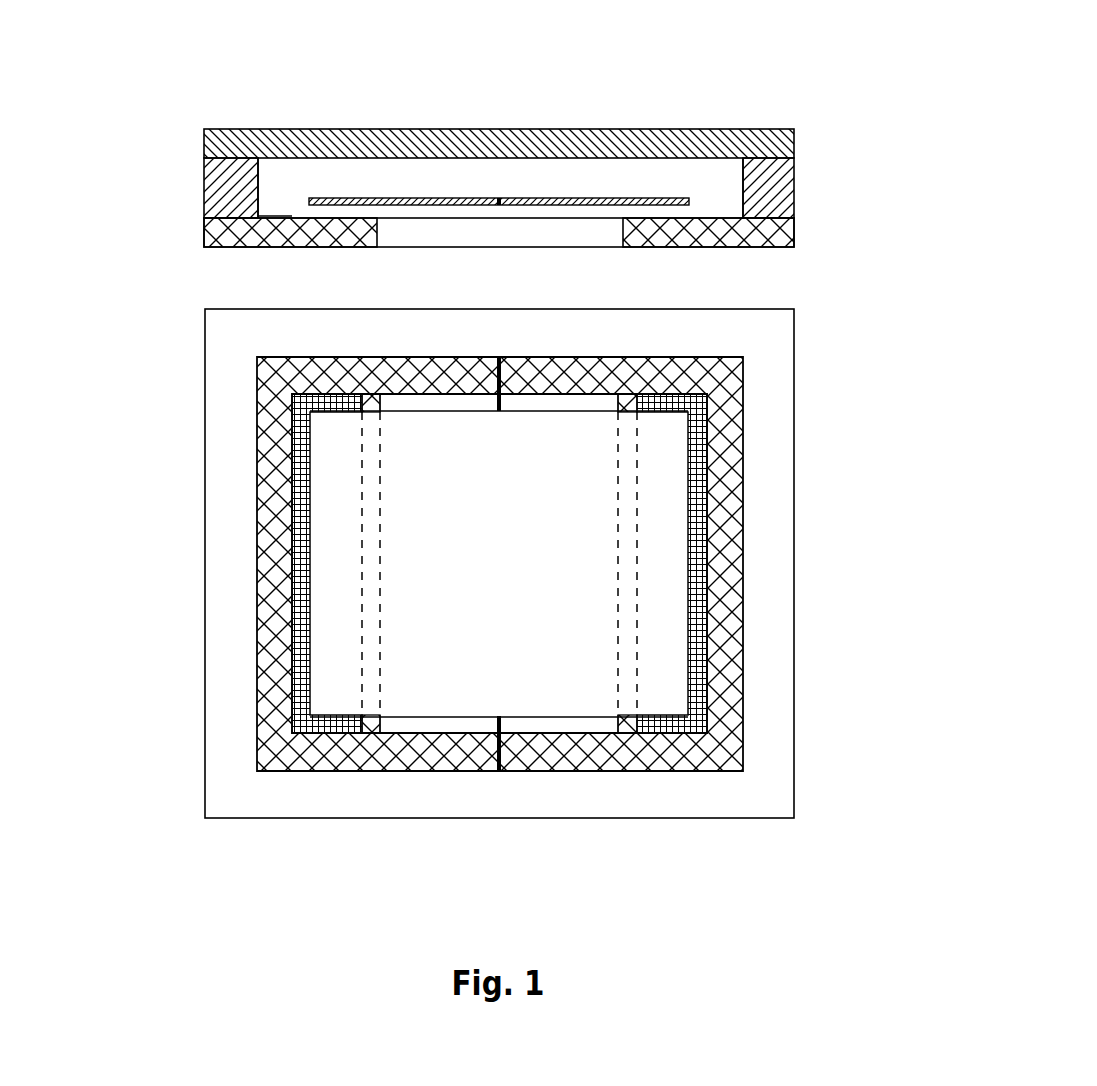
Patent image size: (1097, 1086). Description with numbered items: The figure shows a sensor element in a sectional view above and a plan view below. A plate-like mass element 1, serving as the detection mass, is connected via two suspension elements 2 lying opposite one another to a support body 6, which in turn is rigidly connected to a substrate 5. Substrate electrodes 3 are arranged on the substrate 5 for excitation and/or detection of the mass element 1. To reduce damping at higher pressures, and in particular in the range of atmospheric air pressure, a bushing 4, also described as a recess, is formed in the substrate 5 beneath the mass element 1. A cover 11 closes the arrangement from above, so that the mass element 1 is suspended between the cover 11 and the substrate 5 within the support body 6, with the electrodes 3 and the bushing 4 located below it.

The mass element 1 is at (306, 200).
The suspension elements 2 is at (497, 206).
The substrate electrodes 3 is at (292, 216).
The bushing 4 is at (692, 207).
The substrate 5 is at (204, 231).
The support body 6 is at (498, 309).
The cover 11 is at (498, 128).